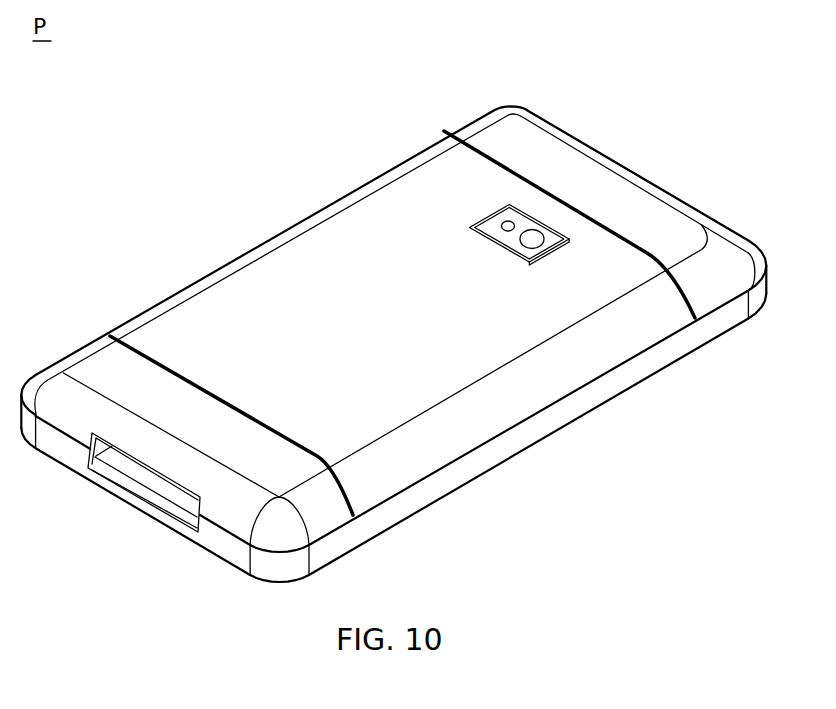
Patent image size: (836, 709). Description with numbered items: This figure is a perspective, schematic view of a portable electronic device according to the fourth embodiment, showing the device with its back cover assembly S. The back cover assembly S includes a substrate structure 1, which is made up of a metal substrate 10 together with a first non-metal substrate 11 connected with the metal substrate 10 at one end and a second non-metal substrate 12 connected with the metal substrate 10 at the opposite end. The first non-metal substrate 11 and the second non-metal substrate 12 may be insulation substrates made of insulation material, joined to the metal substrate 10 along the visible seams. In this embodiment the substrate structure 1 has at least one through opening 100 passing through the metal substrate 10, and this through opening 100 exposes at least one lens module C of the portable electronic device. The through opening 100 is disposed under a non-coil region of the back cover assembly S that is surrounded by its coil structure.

The substrate structure 1 is at (423, 74).
The metal substrate 10 is at (348, 237).
The first non-metal substrate 11 is at (500, 143).
The second non-metal substrate 12 is at (192, 420).
The through opening 100 is at (500, 247).
The lens module C is at (525, 223).
The back cover assembly S is at (618, 157).